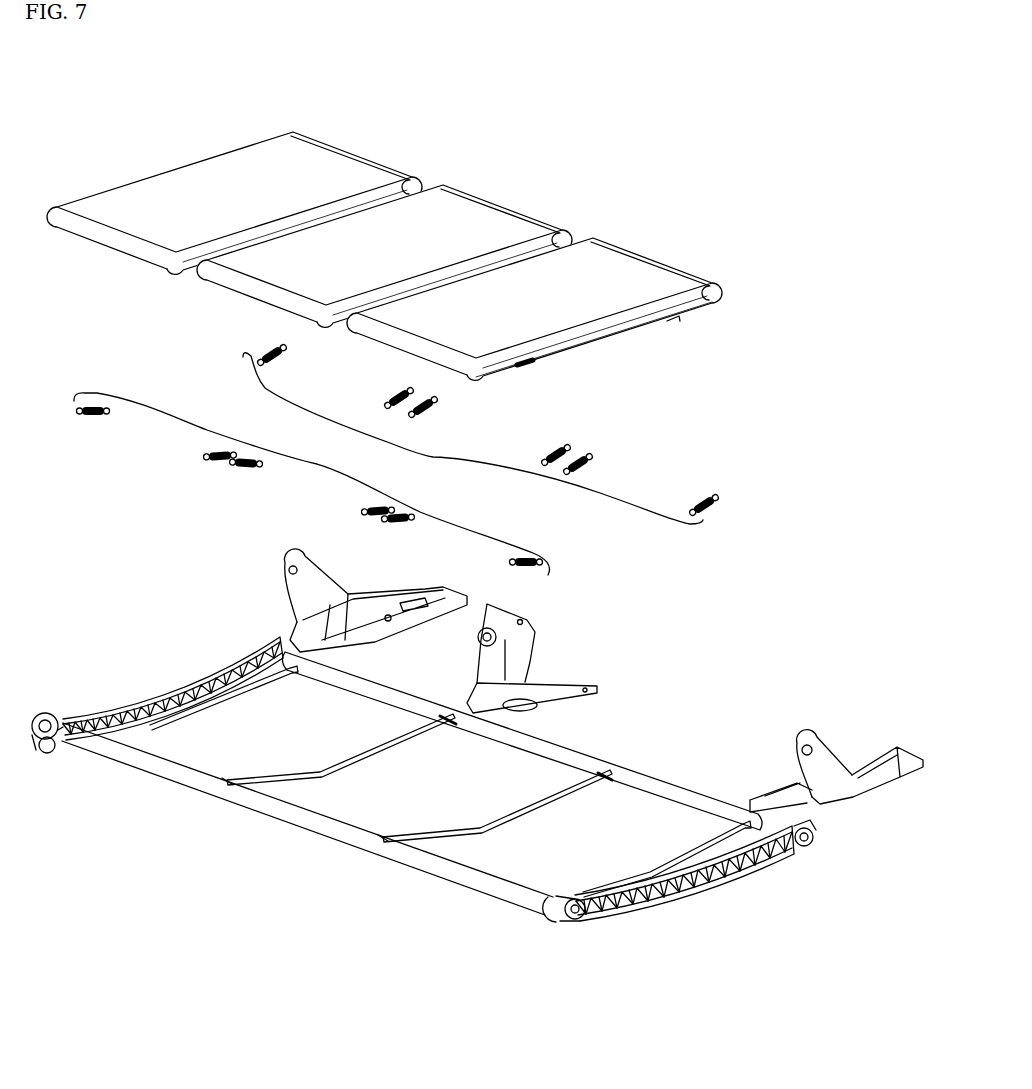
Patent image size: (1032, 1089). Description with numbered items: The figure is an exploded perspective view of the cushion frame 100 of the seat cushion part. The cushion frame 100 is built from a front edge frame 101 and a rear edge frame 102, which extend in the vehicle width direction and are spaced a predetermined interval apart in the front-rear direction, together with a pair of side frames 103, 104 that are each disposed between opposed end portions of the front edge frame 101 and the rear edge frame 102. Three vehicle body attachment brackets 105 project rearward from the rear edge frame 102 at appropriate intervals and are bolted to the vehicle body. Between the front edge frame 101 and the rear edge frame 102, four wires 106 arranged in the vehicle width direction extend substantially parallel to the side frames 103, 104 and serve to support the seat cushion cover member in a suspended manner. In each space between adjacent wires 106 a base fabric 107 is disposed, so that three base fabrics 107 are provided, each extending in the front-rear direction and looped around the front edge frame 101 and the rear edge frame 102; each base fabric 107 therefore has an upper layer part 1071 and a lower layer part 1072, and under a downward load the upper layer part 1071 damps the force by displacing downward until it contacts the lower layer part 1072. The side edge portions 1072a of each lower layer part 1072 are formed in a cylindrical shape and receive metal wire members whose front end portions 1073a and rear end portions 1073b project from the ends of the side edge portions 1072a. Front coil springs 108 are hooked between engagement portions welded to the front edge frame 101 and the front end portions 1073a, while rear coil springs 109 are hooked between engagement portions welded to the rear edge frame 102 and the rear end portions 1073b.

The cushion frame 100 is at (477, 744).
The front edge frame 101 is at (293, 818).
The rear edge frame 102 is at (578, 753).
The side frame 103 is at (693, 898).
The side frame 104 is at (166, 694).
The vehicle body attachment bracket 105 is at (372, 637).
The wire 106 is at (253, 686).
The base fabric 107 is at (401, 247).
The upper layer part 1071 is at (208, 165).
The lower layer part 1072 is at (273, 228).
The side edge portion 1072a is at (603, 343).
The front end portion 1073a is at (520, 367).
The rear end portion 1073b is at (673, 317).
The front coil spring 108 is at (320, 465).
The rear coil spring 109 is at (433, 457).